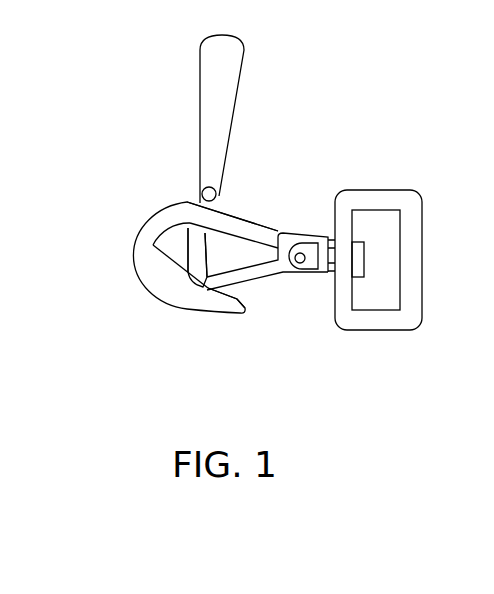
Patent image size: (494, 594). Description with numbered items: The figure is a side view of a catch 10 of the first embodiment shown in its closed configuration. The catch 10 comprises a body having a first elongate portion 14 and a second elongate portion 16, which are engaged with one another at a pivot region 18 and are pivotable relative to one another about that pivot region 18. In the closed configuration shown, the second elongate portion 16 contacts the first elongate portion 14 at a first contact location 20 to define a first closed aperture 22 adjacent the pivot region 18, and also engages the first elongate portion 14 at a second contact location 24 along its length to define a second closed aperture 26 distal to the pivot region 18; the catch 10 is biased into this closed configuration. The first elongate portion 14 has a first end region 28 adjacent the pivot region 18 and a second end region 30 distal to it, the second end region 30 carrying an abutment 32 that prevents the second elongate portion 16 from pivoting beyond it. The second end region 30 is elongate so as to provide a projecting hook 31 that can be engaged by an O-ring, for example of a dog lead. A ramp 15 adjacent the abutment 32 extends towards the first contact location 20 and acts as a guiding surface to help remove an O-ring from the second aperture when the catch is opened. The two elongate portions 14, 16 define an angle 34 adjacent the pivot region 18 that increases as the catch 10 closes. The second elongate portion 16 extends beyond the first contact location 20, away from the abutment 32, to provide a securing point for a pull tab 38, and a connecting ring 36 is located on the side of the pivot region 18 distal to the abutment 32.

The catch 10 is at (338, 94).
The first elongate portion 14 is at (165, 288).
The ramp 15 is at (162, 262).
The second elongate portion 16 is at (253, 277).
The pivot region 18 is at (304, 268).
The first contact location 20 is at (190, 208).
The first closed aperture 22 is at (218, 255).
The second contact location 24 is at (217, 303).
The second closed aperture 26 is at (172, 250).
The first end region 28 is at (308, 234).
The second end region 30 is at (208, 300).
The projecting hook 31 is at (240, 300).
The abutment 32 is at (197, 280).
The angle 34 is at (265, 248).
The connecting ring 36 is at (423, 266).
The pull tab 38 is at (241, 100).